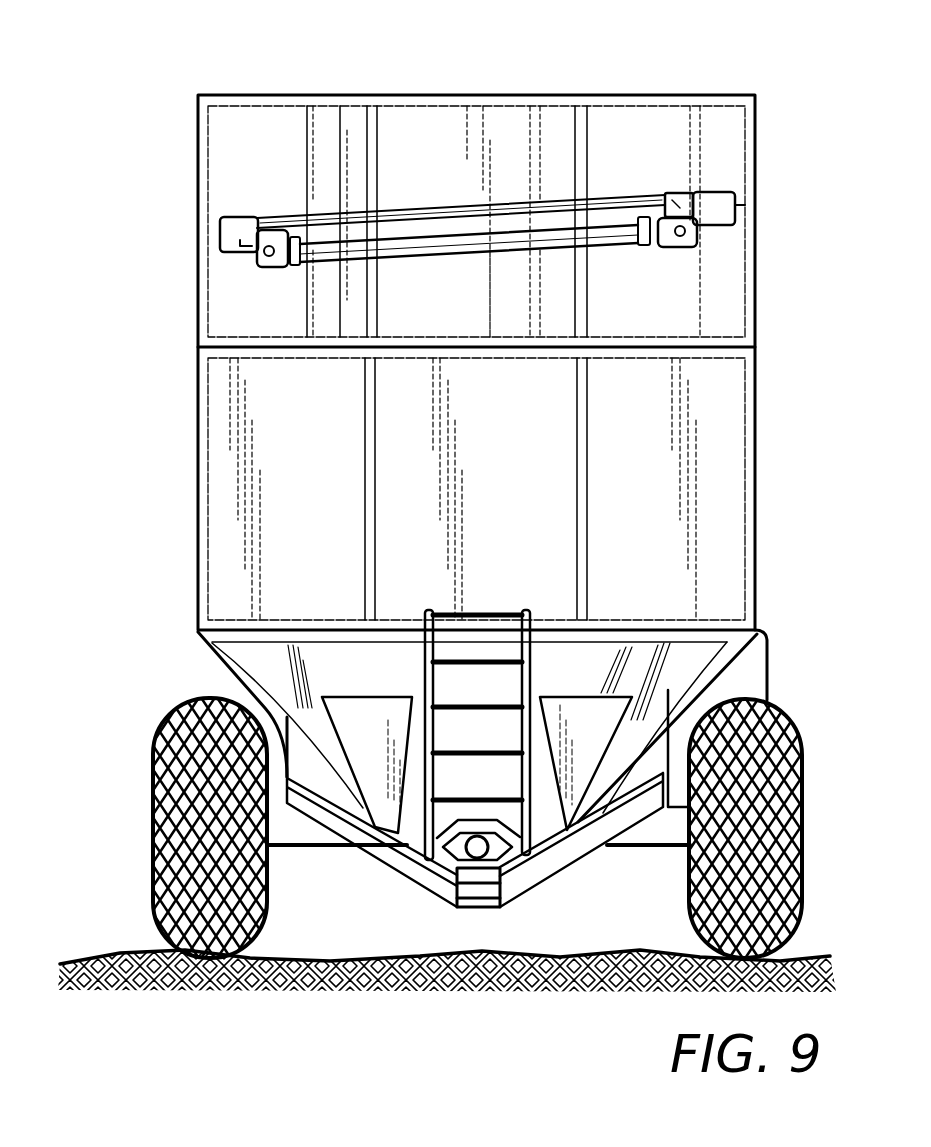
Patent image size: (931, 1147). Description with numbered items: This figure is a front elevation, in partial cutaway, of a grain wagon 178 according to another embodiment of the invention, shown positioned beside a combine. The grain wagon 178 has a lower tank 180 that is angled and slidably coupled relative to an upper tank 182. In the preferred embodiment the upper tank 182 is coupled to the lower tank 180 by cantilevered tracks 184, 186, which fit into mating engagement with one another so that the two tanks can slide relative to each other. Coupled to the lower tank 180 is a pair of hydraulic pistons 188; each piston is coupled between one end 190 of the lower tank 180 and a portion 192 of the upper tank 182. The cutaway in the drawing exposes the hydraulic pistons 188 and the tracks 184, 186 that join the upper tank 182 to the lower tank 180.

The grain wagon 178 is at (360, 85).
The lower tank 180 is at (225, 310).
The upper tank 182 is at (217, 133).
The cantilevered track 184 is at (293, 220).
The cantilevered track 186 is at (240, 250).
The hydraulic pistons 188 is at (622, 250).
The end of lower tank 190 is at (266, 223).
The portion of upper tank 192 is at (682, 195).